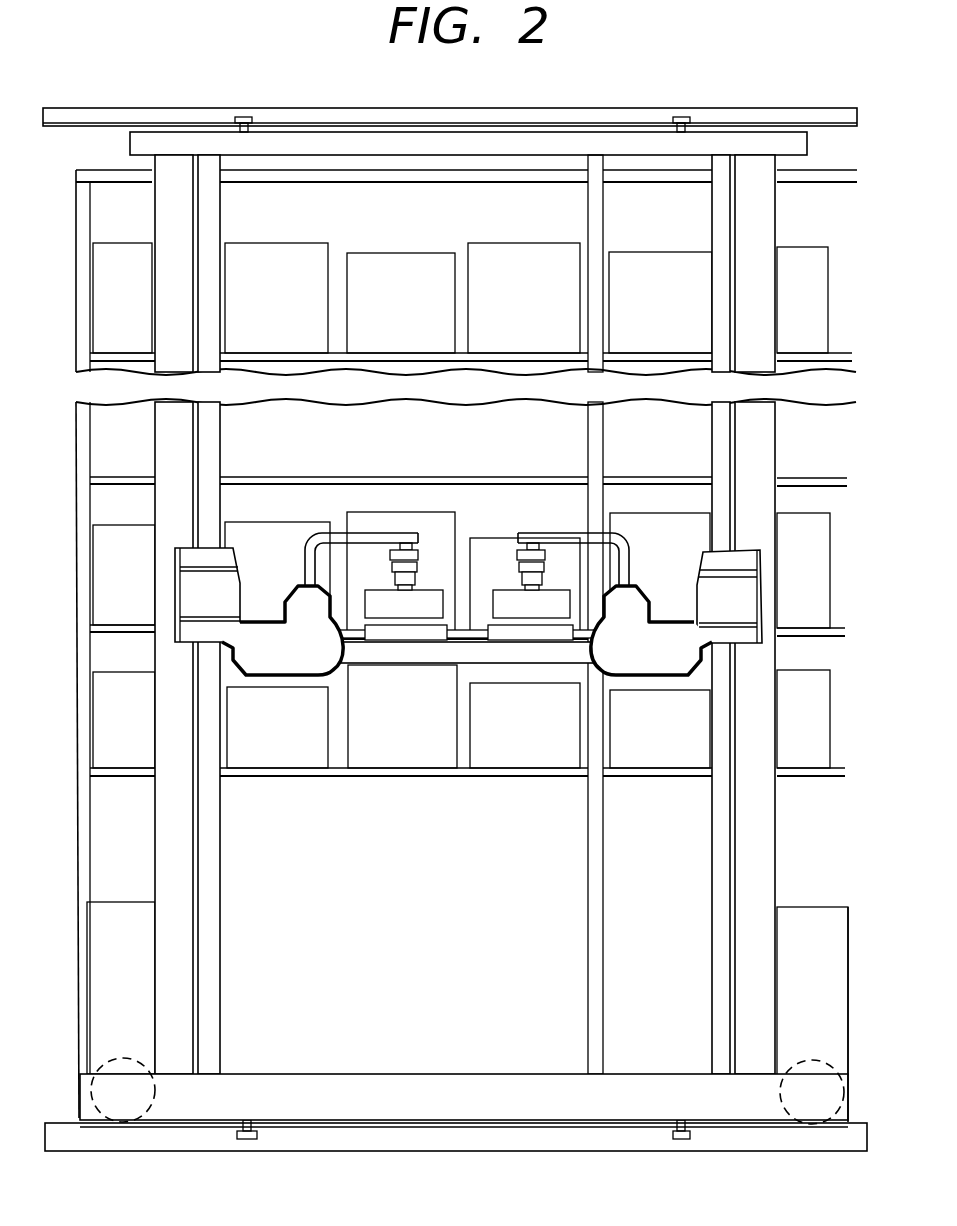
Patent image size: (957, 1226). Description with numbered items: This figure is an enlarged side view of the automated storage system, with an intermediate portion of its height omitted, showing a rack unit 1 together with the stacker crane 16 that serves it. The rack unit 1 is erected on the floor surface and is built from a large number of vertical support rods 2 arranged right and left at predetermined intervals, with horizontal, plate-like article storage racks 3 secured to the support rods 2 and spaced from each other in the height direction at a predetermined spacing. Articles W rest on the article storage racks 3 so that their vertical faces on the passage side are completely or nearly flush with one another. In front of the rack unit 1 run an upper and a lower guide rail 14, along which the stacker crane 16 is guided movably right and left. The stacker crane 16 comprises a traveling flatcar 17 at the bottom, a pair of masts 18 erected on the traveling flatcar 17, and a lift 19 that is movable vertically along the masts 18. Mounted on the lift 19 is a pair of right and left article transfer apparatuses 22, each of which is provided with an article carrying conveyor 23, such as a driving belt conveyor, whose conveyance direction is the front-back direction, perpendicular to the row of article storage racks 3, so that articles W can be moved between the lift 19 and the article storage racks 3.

The rack unit 1 is at (103, 148).
The support rod 2 is at (86, 215).
The article storage rack 3 is at (277, 352).
The article W is at (392, 283).
The guide rail 14 is at (178, 118).
The stacker crane 16 is at (387, 1090).
The traveling flatcar 17 is at (478, 1095).
The mast 18 is at (175, 715).
The lift 19 is at (432, 650).
The article transfer apparatus 22 is at (309, 536).
The article carrying conveyor 23 is at (400, 655).